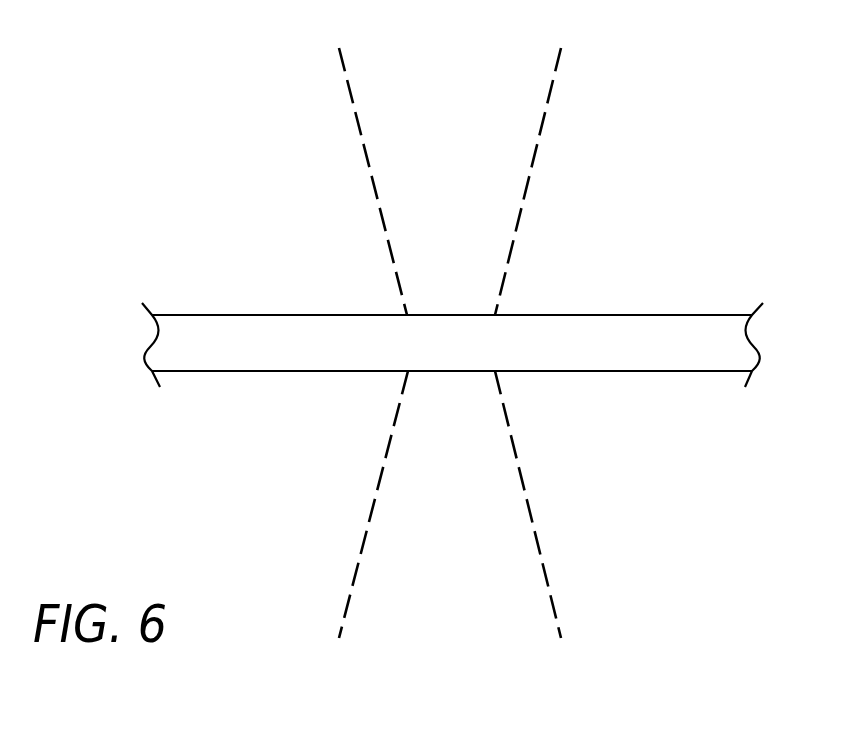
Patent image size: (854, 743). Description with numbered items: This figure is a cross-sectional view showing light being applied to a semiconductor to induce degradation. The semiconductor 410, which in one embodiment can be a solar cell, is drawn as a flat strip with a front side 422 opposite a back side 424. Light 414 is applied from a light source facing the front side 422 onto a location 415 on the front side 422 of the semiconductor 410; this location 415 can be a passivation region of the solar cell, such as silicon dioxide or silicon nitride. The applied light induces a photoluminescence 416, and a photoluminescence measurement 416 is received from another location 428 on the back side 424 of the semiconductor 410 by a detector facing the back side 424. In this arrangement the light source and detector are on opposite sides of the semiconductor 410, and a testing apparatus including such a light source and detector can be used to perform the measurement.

The semiconductor 410 is at (462, 356).
The light 414 is at (356, 122).
The location 415 is at (458, 315).
The photoluminescence 416 is at (372, 507).
The front side 422 is at (232, 268).
The back side 424 is at (240, 402).
The another location 428 is at (437, 371).